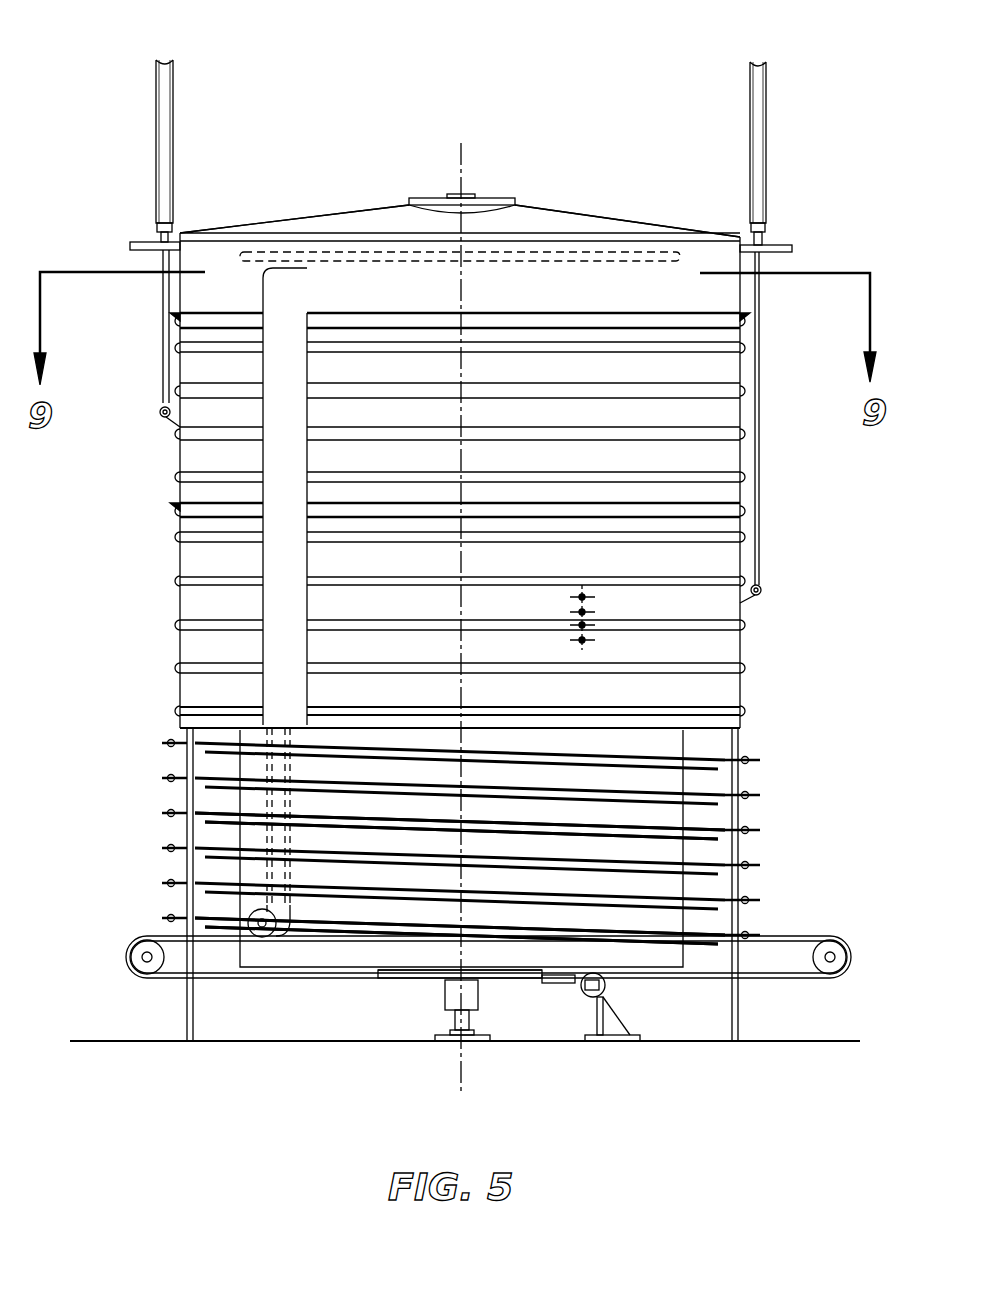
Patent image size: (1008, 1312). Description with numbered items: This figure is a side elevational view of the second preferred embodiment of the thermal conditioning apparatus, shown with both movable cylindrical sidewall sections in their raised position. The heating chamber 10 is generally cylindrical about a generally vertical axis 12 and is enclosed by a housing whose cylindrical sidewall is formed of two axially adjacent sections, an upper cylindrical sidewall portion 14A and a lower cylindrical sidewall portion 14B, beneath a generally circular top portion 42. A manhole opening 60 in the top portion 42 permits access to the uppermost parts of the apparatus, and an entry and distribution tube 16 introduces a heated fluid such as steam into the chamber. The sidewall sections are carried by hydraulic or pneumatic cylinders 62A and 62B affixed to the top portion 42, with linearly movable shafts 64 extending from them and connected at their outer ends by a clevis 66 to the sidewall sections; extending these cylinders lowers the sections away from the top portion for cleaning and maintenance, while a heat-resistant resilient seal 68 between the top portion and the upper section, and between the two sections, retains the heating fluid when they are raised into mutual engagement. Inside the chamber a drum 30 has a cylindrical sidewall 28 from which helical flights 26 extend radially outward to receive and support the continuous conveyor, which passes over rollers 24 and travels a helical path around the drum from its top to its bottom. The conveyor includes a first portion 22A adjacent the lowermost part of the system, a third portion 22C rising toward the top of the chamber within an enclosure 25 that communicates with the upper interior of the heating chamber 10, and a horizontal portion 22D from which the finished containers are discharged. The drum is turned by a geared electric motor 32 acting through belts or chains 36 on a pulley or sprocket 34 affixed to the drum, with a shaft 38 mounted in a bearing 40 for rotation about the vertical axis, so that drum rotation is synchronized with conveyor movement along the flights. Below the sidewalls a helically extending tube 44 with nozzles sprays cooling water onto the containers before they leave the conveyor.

The heating chamber 10 is at (630, 108).
The vertical axis 12 is at (461, 157).
The upper cylindrical sidewall portion 14A is at (724, 362).
The lower cylindrical sidewall portion 14B is at (728, 628).
The entry and distribution tube 16 is at (610, 258).
The first portion of conveyor 22A is at (160, 938).
The third portion of conveyor 22C is at (200, 828).
The horizontal portion of conveyor 22D is at (785, 935).
The rollers 24 is at (140, 966).
The enclosure 25 is at (275, 448).
The helical flights 26 is at (200, 800).
The cylindrical sidewall 28 is at (200, 760).
The drum 30 is at (285, 963).
The geared electric motor 32 is at (605, 985).
The pulley or sprocket 34 is at (508, 982).
The belts or chains 36 is at (565, 982).
The shaft 38 is at (440, 977).
The bearing 40 is at (452, 1032).
The circular top portion 42 is at (285, 222).
The helically extending tube 44 is at (758, 797).
The manhole opening 60 is at (425, 200).
The cylinders 62A is at (156, 167).
The cylinders 62B is at (765, 158).
The linearly movable shafts 64 is at (165, 345).
The clevis 66 is at (160, 412).
The seal 68 is at (172, 316).